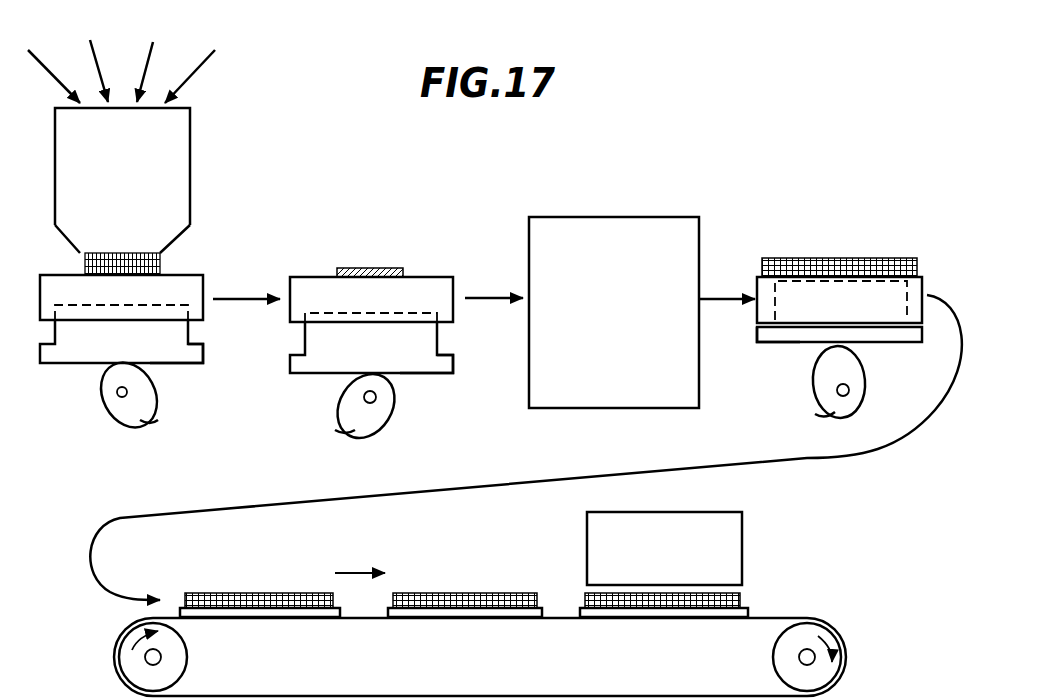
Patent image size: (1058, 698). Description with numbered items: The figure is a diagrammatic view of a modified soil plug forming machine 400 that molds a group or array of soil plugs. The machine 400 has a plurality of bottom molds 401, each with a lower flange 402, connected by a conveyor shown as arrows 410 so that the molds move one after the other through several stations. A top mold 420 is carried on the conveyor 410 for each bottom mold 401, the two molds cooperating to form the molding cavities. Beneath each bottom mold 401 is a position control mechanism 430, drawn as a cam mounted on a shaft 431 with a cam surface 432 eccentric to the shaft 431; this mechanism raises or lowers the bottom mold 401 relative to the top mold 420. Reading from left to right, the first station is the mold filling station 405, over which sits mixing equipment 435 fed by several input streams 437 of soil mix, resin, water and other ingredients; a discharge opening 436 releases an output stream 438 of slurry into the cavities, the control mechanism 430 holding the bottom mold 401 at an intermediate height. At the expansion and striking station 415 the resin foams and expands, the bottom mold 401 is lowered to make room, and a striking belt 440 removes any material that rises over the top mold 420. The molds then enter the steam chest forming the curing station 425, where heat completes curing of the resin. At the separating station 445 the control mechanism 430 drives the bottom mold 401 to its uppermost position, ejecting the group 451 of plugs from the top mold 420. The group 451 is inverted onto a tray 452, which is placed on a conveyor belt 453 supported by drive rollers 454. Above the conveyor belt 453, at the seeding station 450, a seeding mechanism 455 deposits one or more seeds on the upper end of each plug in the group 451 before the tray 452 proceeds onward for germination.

The soil plug forming machine 400 is at (683, 59).
The bottom mold 401 is at (70, 353).
The lower flange 402 is at (202, 355).
The mold filling station 405 is at (207, 184).
The conveyor 410 is at (225, 300).
The expansion and striking station 415 is at (353, 245).
The top mold 420 is at (183, 285).
The curing station 425 is at (592, 215).
The position control mechanism 430 is at (165, 418).
The shaft 431 is at (121, 400).
The cam surface 432 is at (148, 425).
The mixing equipment 435 is at (190, 128).
The discharge opening 436 is at (160, 253).
The input streams 437 is at (195, 68).
The output stream 438 is at (80, 262).
The striking belt 440 is at (375, 268).
The separating station 445 is at (832, 202).
The seeding station 450 is at (562, 532).
The group of soil plugs 451 is at (807, 258).
The tray 452 is at (178, 610).
The conveyor belt 453 is at (157, 612).
The drive rollers 454 is at (182, 648).
The seeding mechanism 455 is at (718, 512).